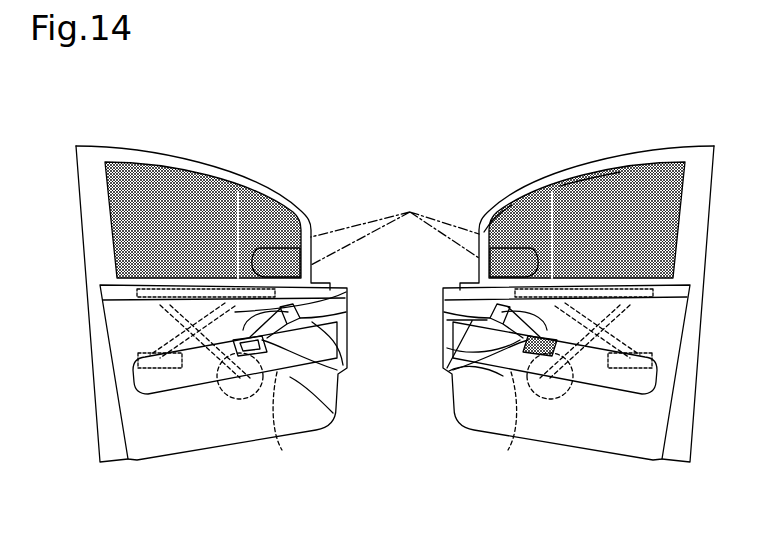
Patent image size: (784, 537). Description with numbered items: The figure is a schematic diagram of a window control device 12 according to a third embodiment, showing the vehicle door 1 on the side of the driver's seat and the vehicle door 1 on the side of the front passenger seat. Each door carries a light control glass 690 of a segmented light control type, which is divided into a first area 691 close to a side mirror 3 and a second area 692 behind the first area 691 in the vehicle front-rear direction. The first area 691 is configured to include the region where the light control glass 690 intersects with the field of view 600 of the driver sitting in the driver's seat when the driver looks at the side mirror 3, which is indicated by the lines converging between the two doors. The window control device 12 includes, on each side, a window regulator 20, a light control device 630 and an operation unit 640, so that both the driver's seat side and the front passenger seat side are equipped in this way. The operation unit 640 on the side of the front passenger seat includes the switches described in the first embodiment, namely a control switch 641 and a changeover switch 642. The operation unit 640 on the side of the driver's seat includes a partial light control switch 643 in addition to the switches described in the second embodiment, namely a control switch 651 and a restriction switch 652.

The vehicle door 1 is at (76, 164).
The side mirror 3 is at (259, 248).
The window control device 12 is at (712, 382).
The window regulator 20 is at (203, 472).
The field of view 600 is at (342, 228).
The light control device 630 is at (395, 424).
The operation unit 640 is at (327, 390).
The control switch 641 is at (338, 292).
The changeover switch 642 is at (344, 339).
The partial light control switch 643 is at (456, 384).
The control switch 651 is at (505, 308).
The restriction switch 652 is at (445, 296).
The light control glass 690 is at (158, 128).
The first area 691 is at (511, 209).
The second area 692 is at (587, 176).